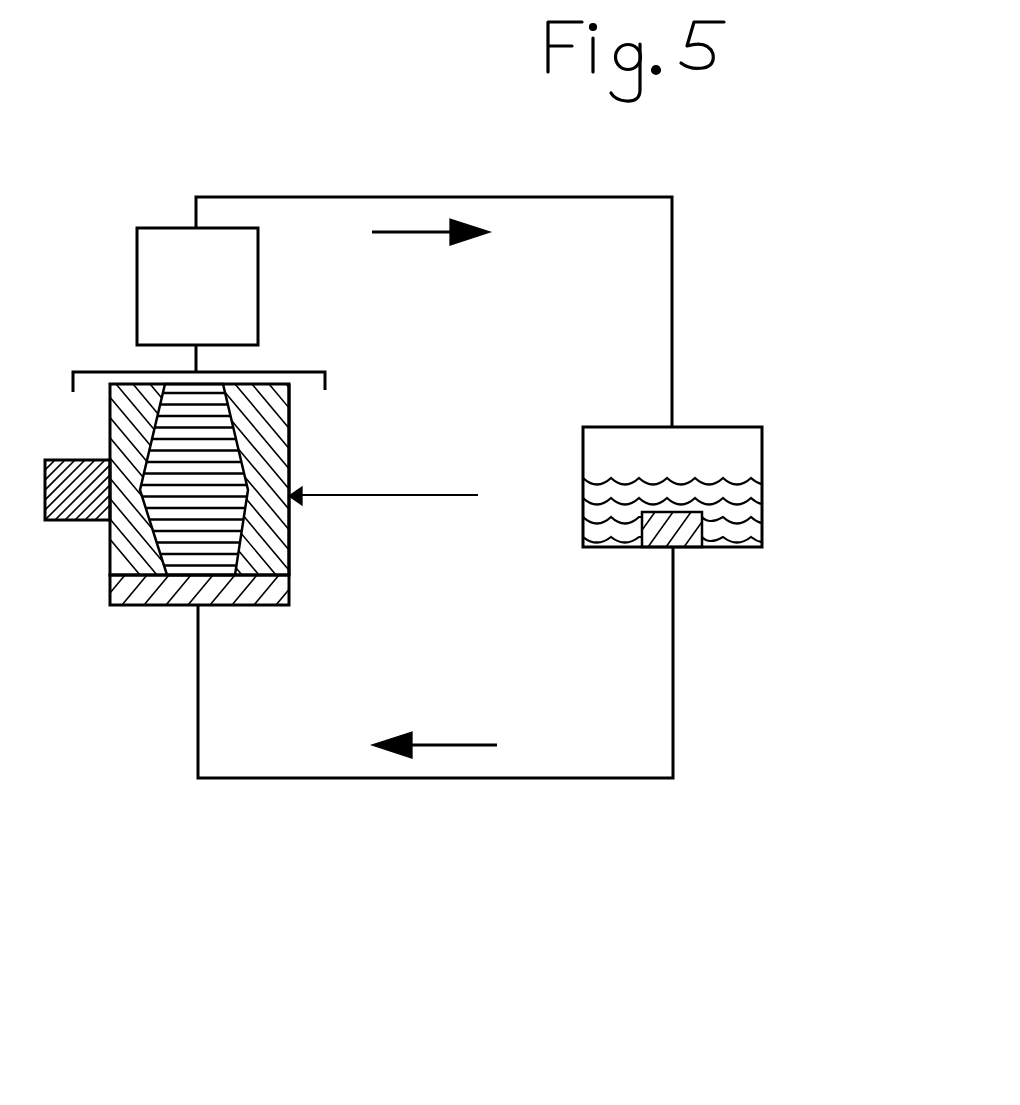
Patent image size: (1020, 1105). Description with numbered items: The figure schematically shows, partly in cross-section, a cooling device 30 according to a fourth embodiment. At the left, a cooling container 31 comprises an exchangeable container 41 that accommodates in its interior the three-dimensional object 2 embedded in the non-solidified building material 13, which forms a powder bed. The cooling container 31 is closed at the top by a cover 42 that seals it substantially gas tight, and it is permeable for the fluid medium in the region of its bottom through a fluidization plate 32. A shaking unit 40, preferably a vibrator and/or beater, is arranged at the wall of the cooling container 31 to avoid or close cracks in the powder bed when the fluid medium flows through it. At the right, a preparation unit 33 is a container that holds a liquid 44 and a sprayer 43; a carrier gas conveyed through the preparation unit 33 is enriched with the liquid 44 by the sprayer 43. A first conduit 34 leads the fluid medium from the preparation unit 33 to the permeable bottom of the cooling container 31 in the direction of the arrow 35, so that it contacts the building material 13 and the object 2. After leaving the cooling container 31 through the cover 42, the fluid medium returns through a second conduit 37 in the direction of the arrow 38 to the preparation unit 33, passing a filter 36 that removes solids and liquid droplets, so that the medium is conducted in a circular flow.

The cooling device 30 is at (212, 105).
The filter 36 is at (137, 288).
The second conduit 37 is at (400, 197).
The arrow 38 is at (407, 232).
The cover 42 is at (325, 382).
The non-solidified building material 13 is at (262, 458).
The three-dimensional object 2 is at (245, 483).
The cooling container 31 is at (406, 490).
The exchangeable container 41 is at (290, 510).
The fluidization plate 32 is at (265, 590).
The shaking unit 40 is at (75, 520).
The arrow 35 is at (447, 745).
The first conduit 34 is at (452, 778).
The preparation unit 33 is at (762, 483).
The liquid 44 is at (747, 525).
The sprayer 43 is at (683, 530).